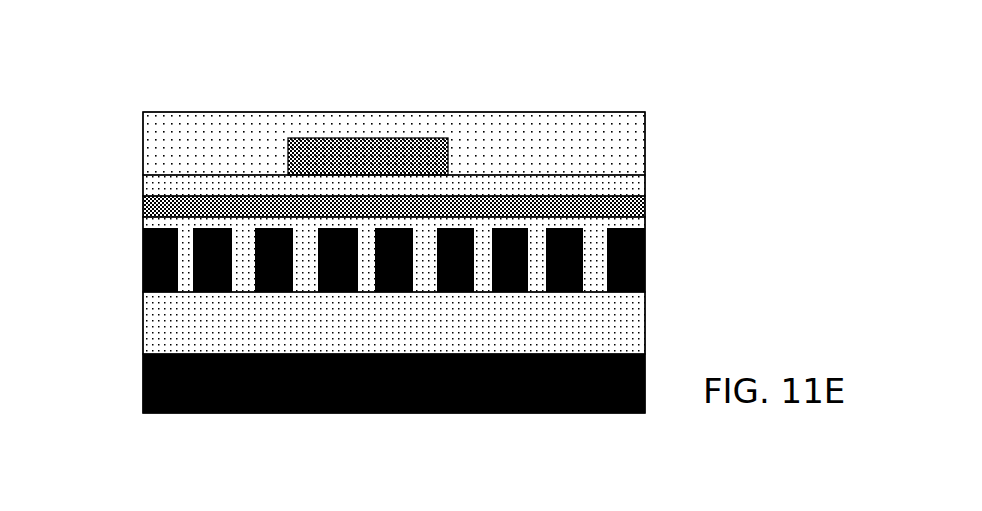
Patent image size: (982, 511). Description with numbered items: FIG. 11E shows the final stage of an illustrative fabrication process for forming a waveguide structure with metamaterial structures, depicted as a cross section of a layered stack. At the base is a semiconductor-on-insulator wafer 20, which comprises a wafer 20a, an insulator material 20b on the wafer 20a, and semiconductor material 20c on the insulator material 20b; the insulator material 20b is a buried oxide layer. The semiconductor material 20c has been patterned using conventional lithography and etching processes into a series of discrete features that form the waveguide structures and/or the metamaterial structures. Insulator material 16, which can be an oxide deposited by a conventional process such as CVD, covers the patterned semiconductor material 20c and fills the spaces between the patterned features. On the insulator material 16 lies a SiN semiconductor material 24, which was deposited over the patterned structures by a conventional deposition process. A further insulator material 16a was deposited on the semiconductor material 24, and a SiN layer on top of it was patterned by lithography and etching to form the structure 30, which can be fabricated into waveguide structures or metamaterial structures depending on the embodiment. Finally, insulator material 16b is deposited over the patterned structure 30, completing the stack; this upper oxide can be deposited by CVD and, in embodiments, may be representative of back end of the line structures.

The structure 30 is at (413, 138).
The insulator material 16b is at (583, 134).
The insulator material 16a is at (638, 188).
The semiconductor material 24 is at (645, 202).
The insulator material 16 is at (645, 220).
The semiconductor-on-insulator wafer 20 is at (381, 321).
The semiconductor material 20c is at (140, 230).
The insulator material 20b is at (635, 323).
The wafer 20a is at (352, 410).